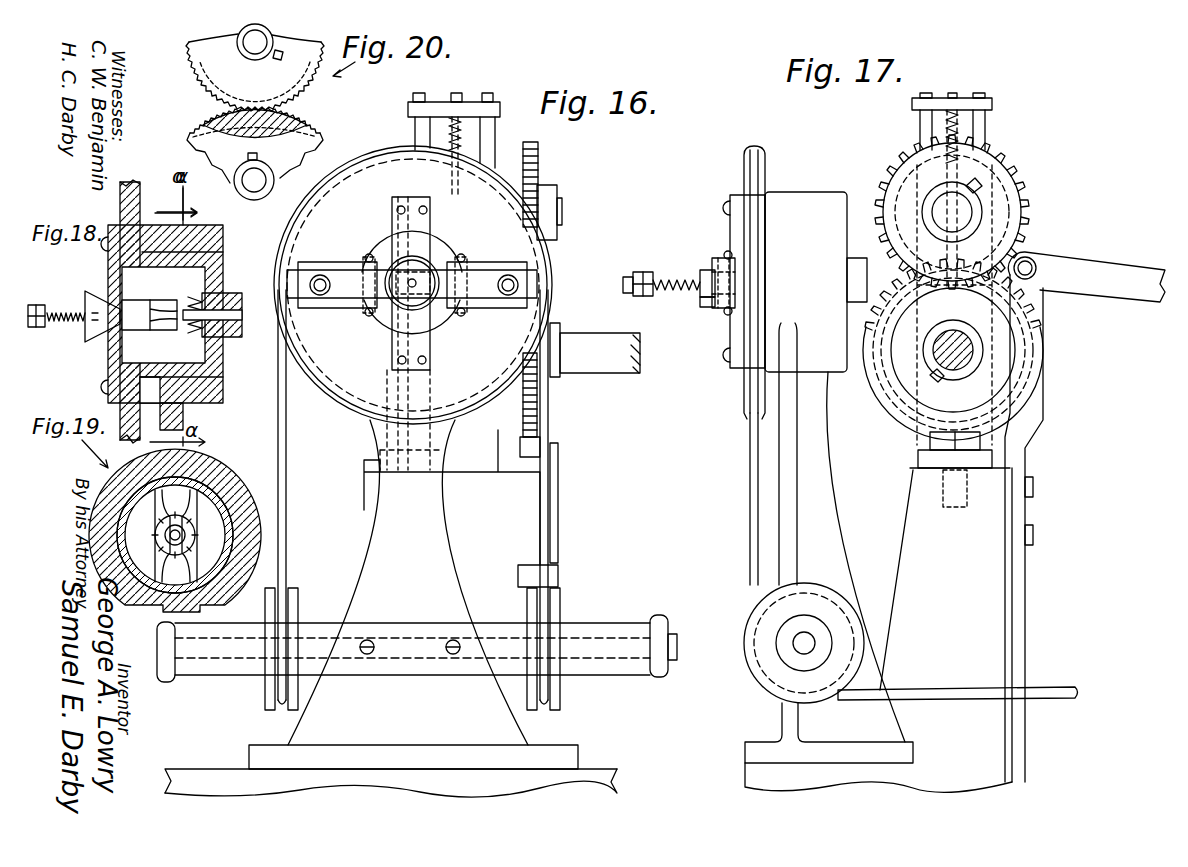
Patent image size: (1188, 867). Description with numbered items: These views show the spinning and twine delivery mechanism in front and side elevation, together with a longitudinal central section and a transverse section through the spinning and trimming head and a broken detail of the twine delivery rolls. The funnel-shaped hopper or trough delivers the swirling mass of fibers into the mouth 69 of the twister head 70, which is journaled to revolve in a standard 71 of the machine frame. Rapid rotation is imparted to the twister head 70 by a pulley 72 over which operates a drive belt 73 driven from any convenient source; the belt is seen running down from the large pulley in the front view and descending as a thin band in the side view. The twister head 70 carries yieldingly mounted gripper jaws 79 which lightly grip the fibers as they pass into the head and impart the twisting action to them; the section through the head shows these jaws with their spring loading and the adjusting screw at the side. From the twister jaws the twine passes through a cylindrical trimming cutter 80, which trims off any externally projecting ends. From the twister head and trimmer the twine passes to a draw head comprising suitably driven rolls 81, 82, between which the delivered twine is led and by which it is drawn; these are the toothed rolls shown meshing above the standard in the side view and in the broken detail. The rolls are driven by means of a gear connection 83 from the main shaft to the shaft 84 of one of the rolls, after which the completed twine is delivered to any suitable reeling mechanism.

In FIG. 16, the mouth 69 is at (433, 303).
In FIG. 17, the mouth 69 is at (712, 268).
In FIG. 18, the mouth 69 is at (87, 290).
In FIG. 18, the twister head 70 is at (225, 250).
In FIG. 19, the twister head 70 is at (130, 549).
In FIG. 16, the standard 71 is at (434, 504).
In FIG. 17, the standard 71 is at (822, 484).
In FIG. 18, the standard 71 is at (225, 402).
In FIG. 19, the standard 71 is at (226, 474).
In FIG. 16, the pulley 72 is at (367, 177).
In FIG. 17, the pulley 72 is at (774, 158).
In FIG. 18, the pulley 72 is at (132, 181).
In FIG. 16, the drive belt 73 is at (287, 480).
In FIG. 17, the drive belt 73 is at (748, 458).
In FIG. 16, the gripper jaws 79 is at (443, 277).
In FIG. 17, the gripper jaws 79 is at (710, 308).
In FIG. 18, the cylindrical trimming cutter 80 is at (185, 318).
In FIG. 19, the cylindrical trimming cutter 80 is at (192, 521).
In FIG. 17, the draw head roll 81 is at (1002, 182).
In FIG. 20, the draw head roll 81 is at (205, 80).
In FIG. 17, the draw head roll 82 is at (904, 380).
In FIG. 20, the draw head roll 82 is at (293, 128).
In FIG. 20, the gear connection 83 is at (257, 192).
In FIG. 17, the shaft 84 is at (958, 366).